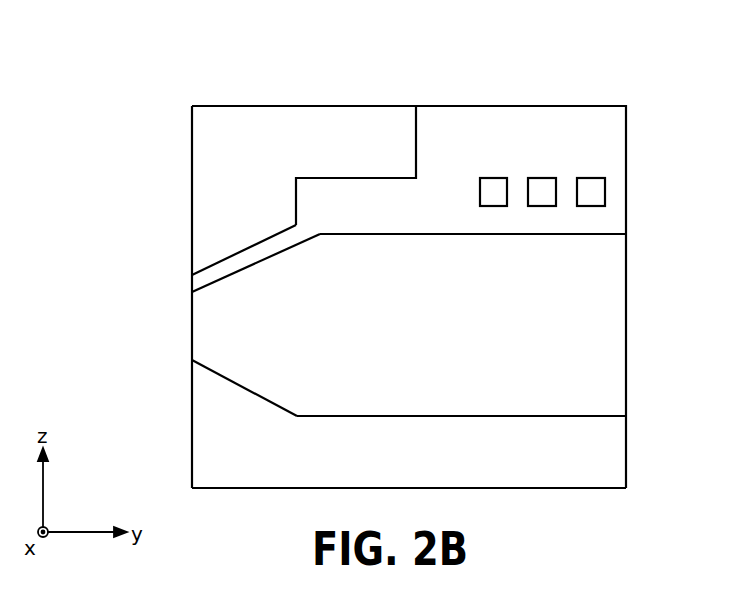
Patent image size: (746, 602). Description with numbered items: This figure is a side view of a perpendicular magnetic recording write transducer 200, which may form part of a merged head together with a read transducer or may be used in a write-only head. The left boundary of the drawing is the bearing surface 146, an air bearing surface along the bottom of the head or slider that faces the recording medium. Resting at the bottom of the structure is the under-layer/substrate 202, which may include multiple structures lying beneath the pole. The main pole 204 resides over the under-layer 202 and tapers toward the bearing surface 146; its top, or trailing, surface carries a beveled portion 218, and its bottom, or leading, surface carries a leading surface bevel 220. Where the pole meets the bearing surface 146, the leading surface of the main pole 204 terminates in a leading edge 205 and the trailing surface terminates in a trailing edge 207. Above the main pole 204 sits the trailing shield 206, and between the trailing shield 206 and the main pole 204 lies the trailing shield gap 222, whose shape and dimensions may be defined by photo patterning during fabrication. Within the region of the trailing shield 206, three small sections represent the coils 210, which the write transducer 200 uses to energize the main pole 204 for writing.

The PMR transducer 200 is at (160, 100).
The bearing surface 146 is at (192, 171).
The under-layer/substrate 202 is at (223, 462).
The main pole 204 is at (450, 338).
The leading edge 205 is at (192, 360).
The trailing shield 206 is at (247, 127).
The trailing edge 207 is at (220, 279).
The coils 210 is at (593, 194).
The beveled portion 218 is at (260, 260).
The leading surface bevel 220 is at (237, 385).
The trailing shield gap 222 is at (203, 277).